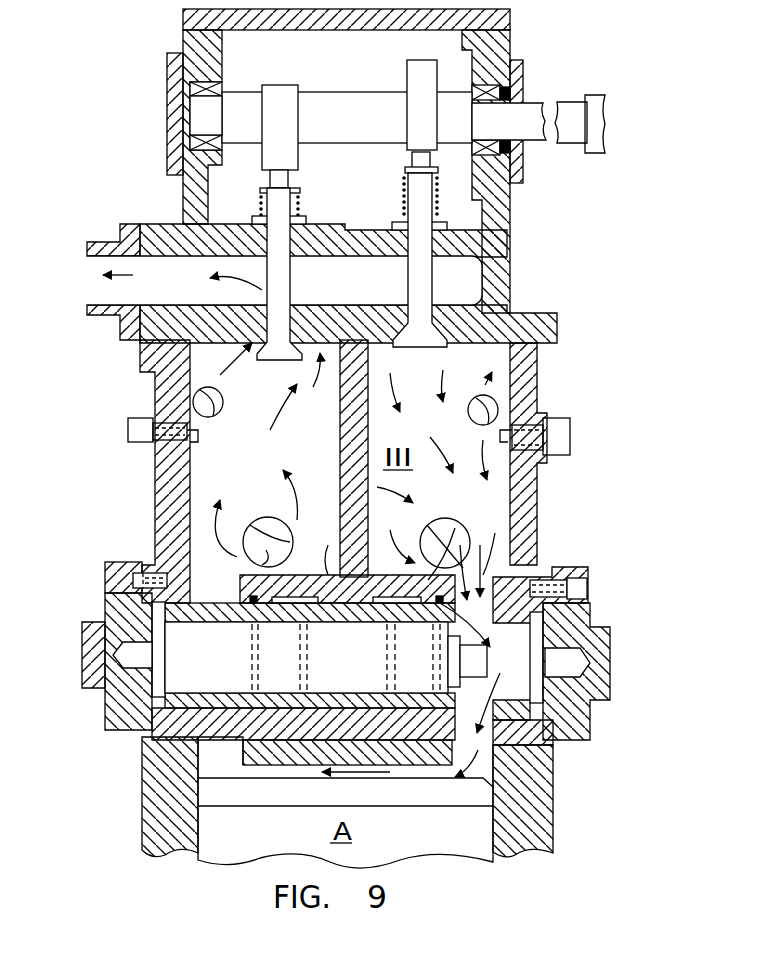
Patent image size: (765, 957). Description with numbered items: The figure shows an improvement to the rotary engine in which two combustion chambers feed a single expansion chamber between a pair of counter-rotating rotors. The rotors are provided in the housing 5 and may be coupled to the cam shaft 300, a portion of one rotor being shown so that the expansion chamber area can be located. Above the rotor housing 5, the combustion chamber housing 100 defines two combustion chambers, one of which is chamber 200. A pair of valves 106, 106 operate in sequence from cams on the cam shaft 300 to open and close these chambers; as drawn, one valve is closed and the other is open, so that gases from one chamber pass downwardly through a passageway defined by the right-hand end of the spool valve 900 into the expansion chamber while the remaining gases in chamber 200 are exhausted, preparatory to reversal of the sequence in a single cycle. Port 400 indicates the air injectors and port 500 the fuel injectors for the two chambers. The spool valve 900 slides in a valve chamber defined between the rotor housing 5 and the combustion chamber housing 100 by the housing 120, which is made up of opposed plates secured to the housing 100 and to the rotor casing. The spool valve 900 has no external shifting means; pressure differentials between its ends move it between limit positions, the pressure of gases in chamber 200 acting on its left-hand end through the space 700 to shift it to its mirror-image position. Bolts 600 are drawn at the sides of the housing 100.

The cam shaft 300 is at (528, 100).
The valve 106 is at (290, 278).
The fuel injector port 500 is at (220, 392).
The bolt 600 is at (140, 410).
The combustion chamber housing 100 is at (157, 487).
The combustion chamber 200 is at (282, 457).
The air injector port 400 is at (265, 518).
The space 700 is at (180, 596).
The valve housing 120 is at (82, 623).
The spool valve 900 is at (252, 703).
The housing 5 is at (553, 768).